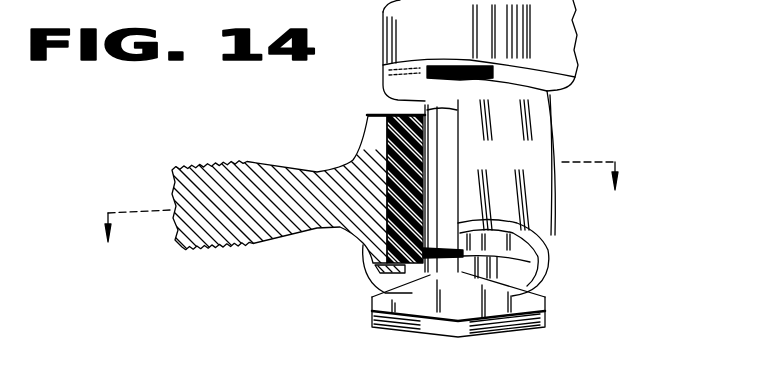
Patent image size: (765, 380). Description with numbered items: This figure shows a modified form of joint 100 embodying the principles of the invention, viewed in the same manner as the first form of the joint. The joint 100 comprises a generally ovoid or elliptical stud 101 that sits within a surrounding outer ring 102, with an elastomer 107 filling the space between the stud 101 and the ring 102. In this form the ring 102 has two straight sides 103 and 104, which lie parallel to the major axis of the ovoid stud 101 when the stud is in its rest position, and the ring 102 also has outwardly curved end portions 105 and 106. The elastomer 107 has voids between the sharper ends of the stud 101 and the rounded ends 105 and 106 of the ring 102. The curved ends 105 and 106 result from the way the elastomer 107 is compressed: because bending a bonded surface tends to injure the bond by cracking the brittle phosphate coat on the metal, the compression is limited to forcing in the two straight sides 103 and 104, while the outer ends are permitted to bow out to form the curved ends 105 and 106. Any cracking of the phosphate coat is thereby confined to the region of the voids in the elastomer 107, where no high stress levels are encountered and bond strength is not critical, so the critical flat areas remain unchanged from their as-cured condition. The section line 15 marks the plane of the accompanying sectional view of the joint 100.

The joint 100 is at (602, 126).
The stud 101 is at (445, 158).
The outer ring 102 is at (547, 272).
The straight side 103 is at (548, 266).
The straight side 104 is at (377, 267).
The curved end portion 105 is at (532, 217).
The curved end portion 106 is at (530, 288).
The elastomer 107 is at (398, 104).
The section line 15- 15 is at (363, 215).